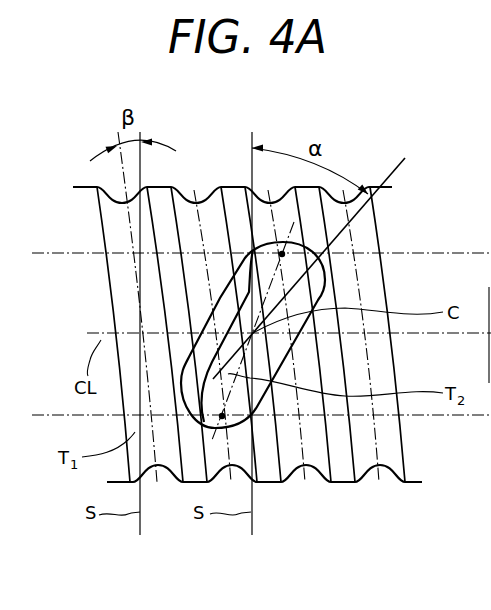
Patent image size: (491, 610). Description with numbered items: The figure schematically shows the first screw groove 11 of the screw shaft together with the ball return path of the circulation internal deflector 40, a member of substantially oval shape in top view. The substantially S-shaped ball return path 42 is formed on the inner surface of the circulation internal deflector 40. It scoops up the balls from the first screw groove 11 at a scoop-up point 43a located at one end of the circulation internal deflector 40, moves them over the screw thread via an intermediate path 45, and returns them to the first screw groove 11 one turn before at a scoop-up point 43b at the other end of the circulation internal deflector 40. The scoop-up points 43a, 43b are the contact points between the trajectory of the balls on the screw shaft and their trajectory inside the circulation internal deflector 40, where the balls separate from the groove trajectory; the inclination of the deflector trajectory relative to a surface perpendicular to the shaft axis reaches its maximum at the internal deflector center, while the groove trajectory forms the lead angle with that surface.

The first screw groove 11 is at (389, 484).
The circulation internal deflector 40 is at (336, 279).
The ball return path 42 is at (242, 365).
The scoop-up point 43a is at (284, 252).
The scoop-up point 43b is at (222, 418).
The intermediate path 45 is at (239, 323).